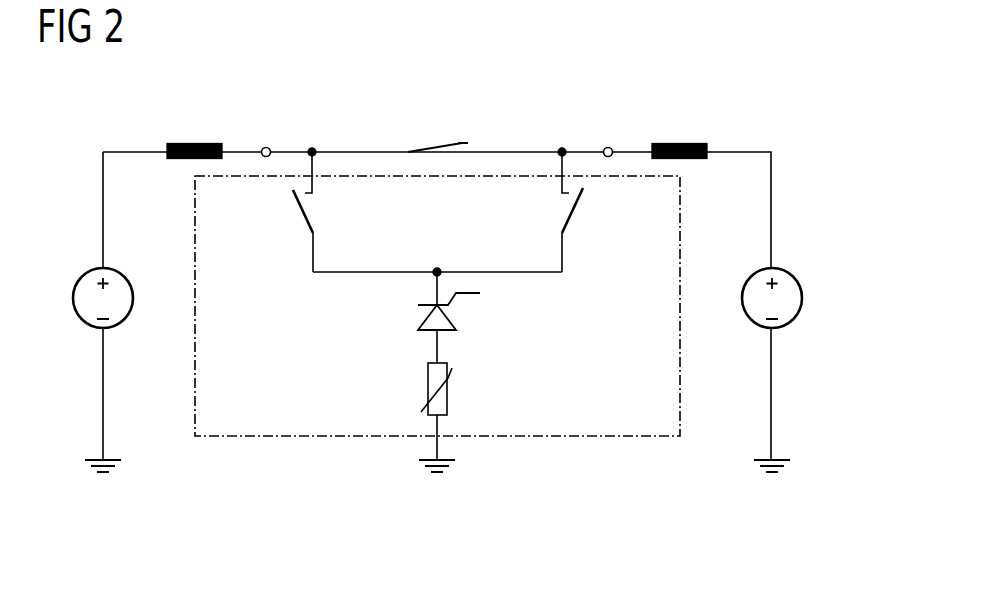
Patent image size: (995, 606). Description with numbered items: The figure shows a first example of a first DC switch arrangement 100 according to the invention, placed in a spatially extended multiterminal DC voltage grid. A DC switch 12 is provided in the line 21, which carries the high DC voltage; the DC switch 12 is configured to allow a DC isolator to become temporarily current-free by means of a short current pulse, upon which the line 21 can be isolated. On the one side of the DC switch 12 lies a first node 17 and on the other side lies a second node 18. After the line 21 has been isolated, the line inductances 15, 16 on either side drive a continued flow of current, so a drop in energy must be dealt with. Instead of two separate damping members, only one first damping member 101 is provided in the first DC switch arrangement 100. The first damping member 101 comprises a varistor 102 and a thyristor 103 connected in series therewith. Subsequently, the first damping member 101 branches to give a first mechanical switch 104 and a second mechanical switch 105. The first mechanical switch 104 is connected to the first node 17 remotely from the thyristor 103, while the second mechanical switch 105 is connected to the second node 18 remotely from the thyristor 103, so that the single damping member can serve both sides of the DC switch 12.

The first DC switch arrangement 100 is at (620, 88).
The first damping member 101 is at (604, 437).
The varistor 102 is at (449, 400).
The thyristor 103 is at (452, 316).
The first mechanical switch 104 is at (575, 214).
The second mechanical switch 105 is at (294, 214).
The DC switch 12 is at (431, 148).
The line inductance 15 is at (679, 143).
The line inductance 16 is at (194, 143).
The first node 17 is at (560, 147).
The second node 18 is at (312, 147).
The line 21 is at (509, 148).